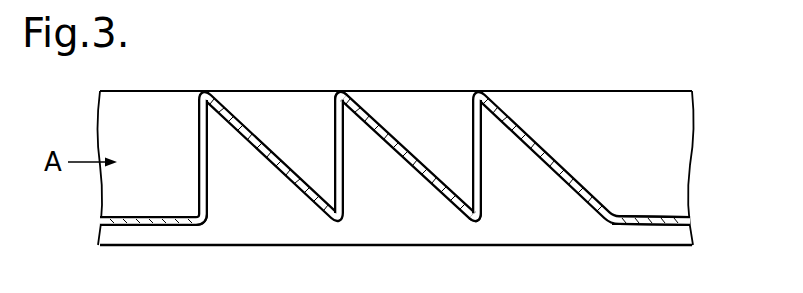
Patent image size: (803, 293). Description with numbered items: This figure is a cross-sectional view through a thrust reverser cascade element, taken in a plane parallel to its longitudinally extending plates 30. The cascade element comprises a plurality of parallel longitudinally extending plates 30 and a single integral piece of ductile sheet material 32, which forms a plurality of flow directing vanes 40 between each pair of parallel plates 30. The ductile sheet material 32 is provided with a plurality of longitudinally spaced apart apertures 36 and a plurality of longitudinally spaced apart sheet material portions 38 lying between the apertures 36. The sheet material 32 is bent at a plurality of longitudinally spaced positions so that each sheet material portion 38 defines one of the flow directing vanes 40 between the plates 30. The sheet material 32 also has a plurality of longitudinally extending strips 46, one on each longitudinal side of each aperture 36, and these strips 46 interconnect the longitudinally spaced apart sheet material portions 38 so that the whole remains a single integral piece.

The longitudinally extending plate 30 is at (617, 91).
The single integral piece of ductile sheet material 32 is at (652, 216).
The aperture 36 is at (195, 148).
The sheet material portion 38 is at (552, 150).
The flow directing vane 40 is at (585, 166).
The longitudinally extending strip 46 is at (333, 118).